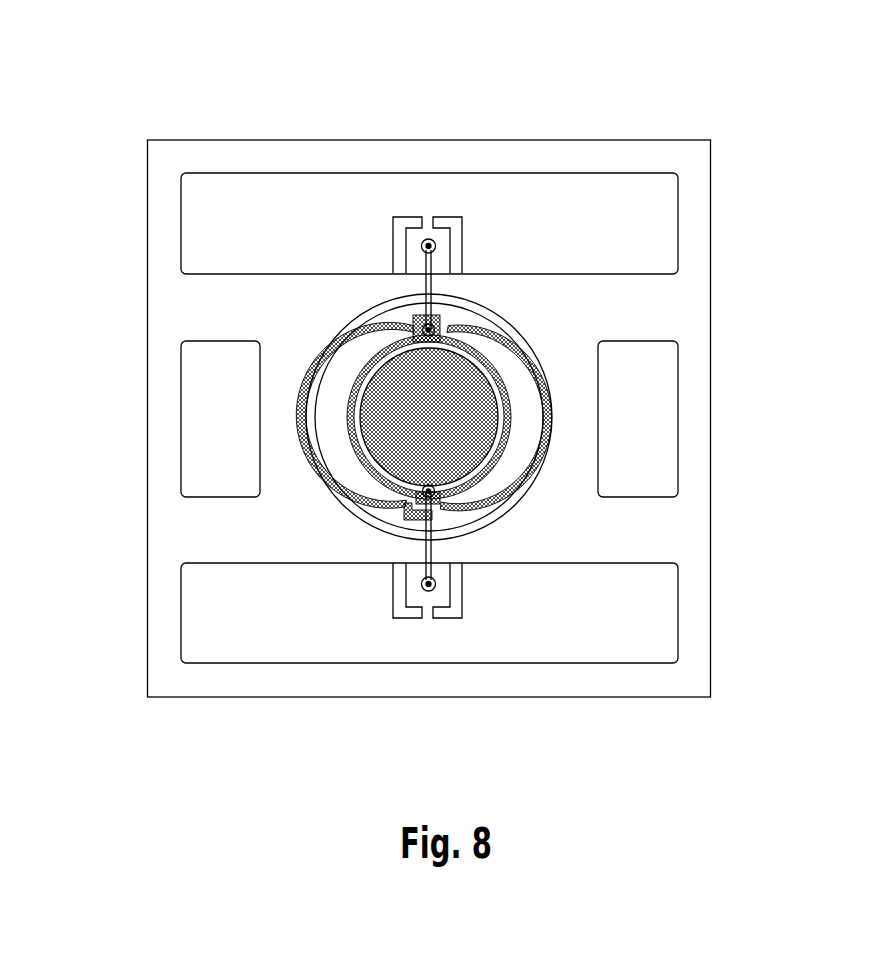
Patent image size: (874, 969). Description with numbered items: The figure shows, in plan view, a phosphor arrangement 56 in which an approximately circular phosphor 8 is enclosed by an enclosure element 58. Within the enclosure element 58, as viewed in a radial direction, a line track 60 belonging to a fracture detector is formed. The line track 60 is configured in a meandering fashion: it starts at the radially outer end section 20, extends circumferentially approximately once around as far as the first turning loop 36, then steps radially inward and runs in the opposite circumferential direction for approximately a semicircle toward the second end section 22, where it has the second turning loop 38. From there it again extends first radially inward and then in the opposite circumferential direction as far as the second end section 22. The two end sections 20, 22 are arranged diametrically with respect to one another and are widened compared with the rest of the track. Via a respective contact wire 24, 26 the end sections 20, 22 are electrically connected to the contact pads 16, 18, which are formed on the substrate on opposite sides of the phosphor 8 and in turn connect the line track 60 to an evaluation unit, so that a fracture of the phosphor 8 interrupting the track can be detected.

The phosphor arrangement 56 is at (772, 137).
The contact pad 16 is at (652, 235).
The contact pad 18 is at (648, 621).
The phosphor 8 is at (468, 413).
The enclosure element 58 is at (368, 330).
The contact wire 24 is at (425, 293).
The contact wire 26 is at (427, 555).
The end section 20 is at (432, 243).
The end section 22 is at (433, 492).
The first turning loop 36 is at (443, 312).
The line track 60 is at (481, 332).
The second turning loop 38 is at (446, 494).